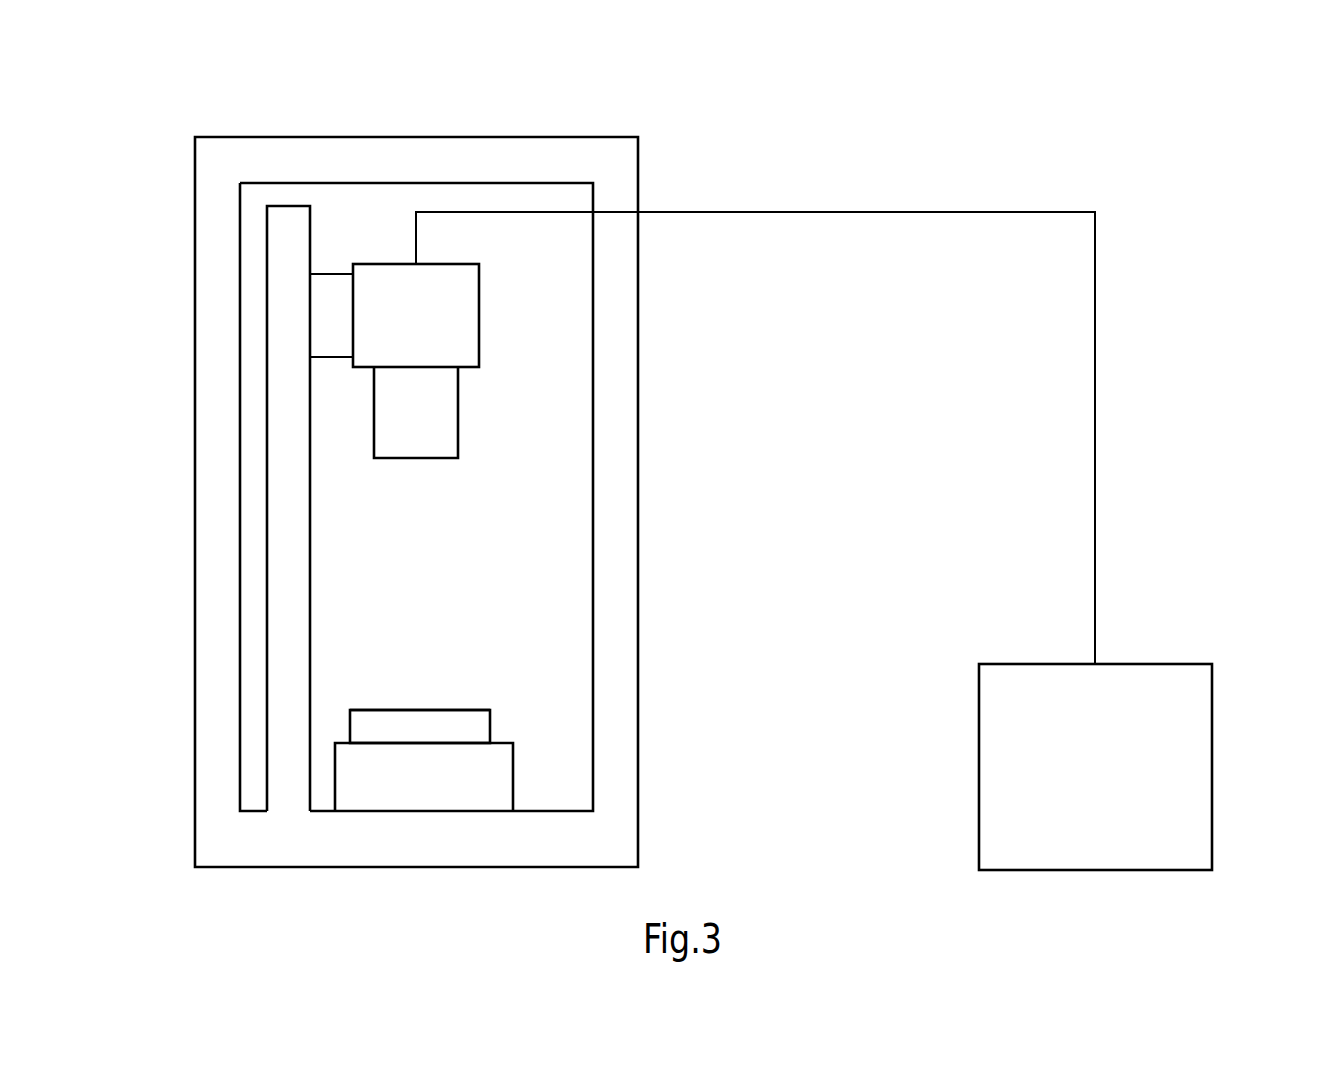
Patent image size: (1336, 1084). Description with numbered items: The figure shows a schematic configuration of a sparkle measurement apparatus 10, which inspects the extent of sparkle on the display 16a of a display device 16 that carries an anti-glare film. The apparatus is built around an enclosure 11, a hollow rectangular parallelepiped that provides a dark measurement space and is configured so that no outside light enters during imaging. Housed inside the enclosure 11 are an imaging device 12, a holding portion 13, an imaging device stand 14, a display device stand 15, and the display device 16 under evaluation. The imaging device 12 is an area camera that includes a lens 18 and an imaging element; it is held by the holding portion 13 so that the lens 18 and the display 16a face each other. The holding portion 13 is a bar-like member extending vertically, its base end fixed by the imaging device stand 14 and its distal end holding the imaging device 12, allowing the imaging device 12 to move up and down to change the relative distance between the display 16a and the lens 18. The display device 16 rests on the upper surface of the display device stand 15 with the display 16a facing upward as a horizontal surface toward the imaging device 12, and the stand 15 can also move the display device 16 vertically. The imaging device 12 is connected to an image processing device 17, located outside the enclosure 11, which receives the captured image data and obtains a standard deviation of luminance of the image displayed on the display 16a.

The sparkle measurement apparatus 10 is at (1199, 66).
The enclosure 11 is at (195, 368).
The imaging device 12 is at (479, 310).
The holding portion 13 is at (270, 517).
The imaging device stand 14 is at (222, 841).
The display device stand 15 is at (513, 773).
The display device 16 is at (490, 722).
The display 16a is at (457, 710).
The image processing device 17 is at (1212, 762).
The lens 18 is at (458, 410).